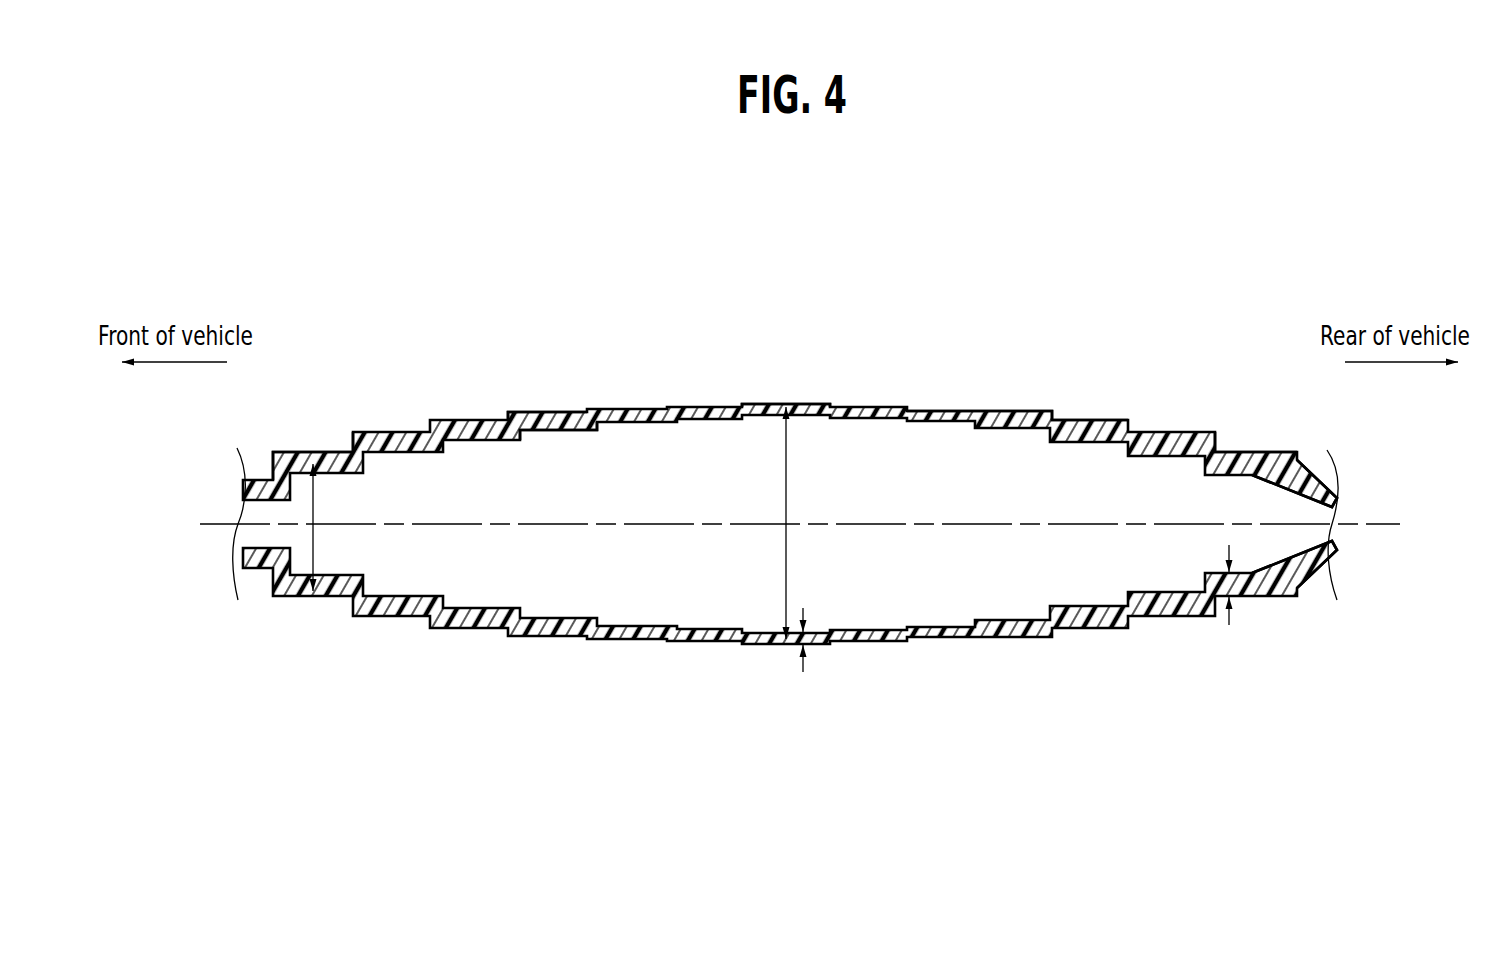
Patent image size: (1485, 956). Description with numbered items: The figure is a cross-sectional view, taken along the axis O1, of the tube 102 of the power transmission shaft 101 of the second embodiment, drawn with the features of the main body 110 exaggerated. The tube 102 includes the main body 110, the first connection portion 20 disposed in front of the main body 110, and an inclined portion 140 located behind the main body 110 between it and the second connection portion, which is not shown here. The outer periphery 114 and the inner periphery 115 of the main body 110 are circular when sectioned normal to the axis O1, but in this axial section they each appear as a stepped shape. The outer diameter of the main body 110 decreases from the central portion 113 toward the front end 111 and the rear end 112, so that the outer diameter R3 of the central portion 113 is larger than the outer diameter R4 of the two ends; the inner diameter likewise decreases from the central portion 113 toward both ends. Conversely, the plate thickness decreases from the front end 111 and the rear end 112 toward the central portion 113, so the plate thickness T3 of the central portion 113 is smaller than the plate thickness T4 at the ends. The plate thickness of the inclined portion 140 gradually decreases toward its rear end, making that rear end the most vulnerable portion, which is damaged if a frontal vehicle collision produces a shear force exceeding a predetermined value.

The power transmission shaft 101 is at (1043, 258).
The tube 102 is at (863, 361).
The main body 110 is at (1054, 390).
The front end 111 is at (298, 452).
The rear end 112 is at (1252, 452).
The central portion 113 is at (773, 404).
The outer periphery 114 is at (537, 417).
The inner periphery 115 is at (557, 427).
The inclined portion 140 is at (1309, 574).
The first connection portion 20 is at (250, 568).
The axis O1 is at (218, 524).
The outer diameter of both ends R4 is at (336, 527).
The outer diameter of the central portion R3 is at (808, 523).
The plate thickness of the central portion T3 is at (824, 645).
The plate thickness of both ends T4 is at (1252, 588).